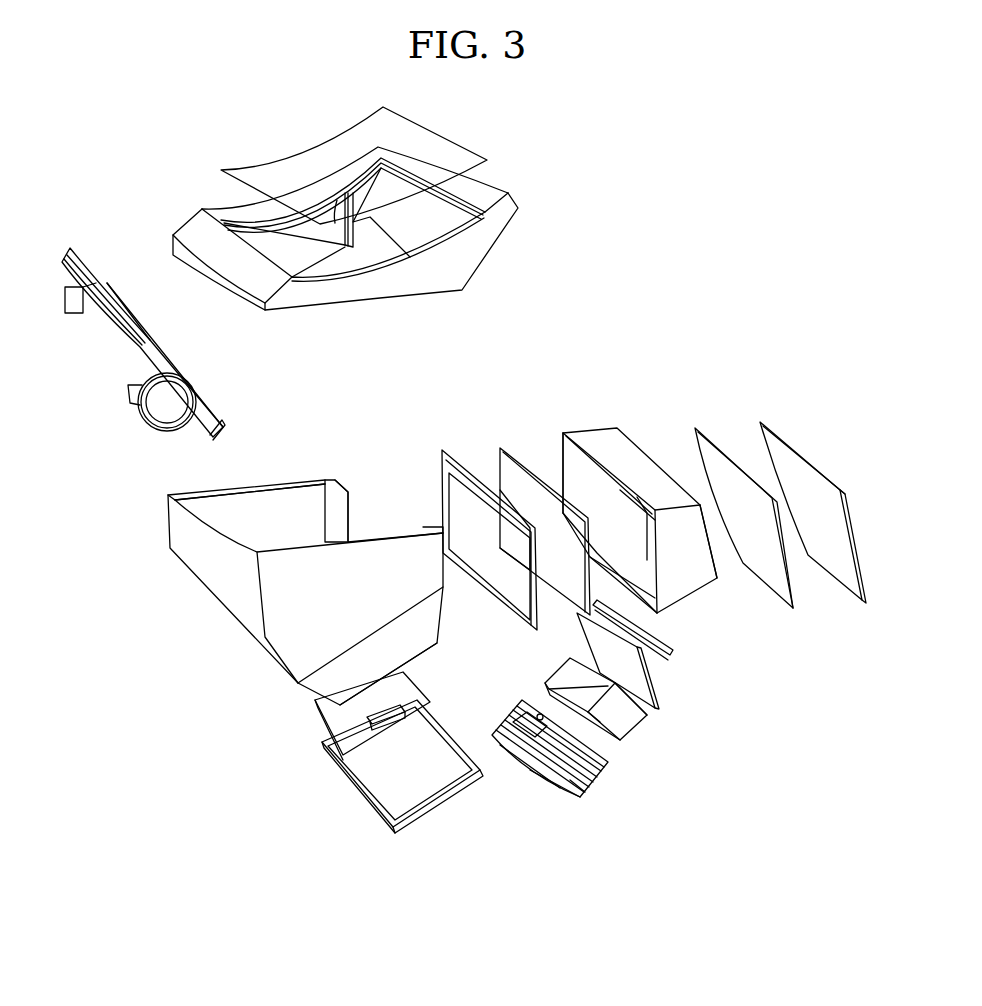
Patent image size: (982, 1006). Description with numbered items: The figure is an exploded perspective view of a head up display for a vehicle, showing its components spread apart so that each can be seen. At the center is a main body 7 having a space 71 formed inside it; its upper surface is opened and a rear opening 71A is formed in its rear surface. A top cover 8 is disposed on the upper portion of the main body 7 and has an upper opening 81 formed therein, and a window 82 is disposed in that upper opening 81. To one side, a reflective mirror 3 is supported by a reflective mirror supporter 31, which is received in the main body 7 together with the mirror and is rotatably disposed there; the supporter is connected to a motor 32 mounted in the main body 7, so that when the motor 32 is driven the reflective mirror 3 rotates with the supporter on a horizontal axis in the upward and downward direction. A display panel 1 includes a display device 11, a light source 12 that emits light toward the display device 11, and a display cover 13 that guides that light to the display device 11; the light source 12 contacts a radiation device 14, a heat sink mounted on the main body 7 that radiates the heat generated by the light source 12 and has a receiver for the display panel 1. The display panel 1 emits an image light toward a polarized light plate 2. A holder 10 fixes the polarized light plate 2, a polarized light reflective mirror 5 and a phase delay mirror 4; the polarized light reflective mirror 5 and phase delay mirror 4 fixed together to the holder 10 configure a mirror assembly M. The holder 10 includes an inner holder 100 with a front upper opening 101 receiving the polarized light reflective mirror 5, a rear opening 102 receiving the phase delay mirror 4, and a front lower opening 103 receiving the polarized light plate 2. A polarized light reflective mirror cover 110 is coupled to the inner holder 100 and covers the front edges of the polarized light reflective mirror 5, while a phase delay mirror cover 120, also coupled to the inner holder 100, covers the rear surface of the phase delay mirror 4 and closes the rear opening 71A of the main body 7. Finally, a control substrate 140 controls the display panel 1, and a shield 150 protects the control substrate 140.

The display panel 1 is at (540, 780).
The polarized light plate 2 is at (657, 685).
The reflective mirror 3 is at (95, 280).
The phase delay mirror 4 is at (770, 577).
The polarized light reflective mirror 5 is at (570, 585).
The main body 7 is at (228, 577).
The top cover 8 is at (488, 251).
The holder 10 is at (545, 373).
The display device 11 is at (645, 717).
The light source 12 is at (620, 743).
The display cover 13 is at (627, 723).
The radiation device 14 is at (583, 775).
The reflective mirror supporter 31 is at (90, 316).
The motor 32 is at (158, 417).
The space 71 is at (265, 517).
The rear opening 71A is at (363, 520).
The upper opening 81 is at (339, 264).
The window 82 is at (318, 150).
The inner holder 100 is at (610, 432).
The front upper opening 101 is at (573, 477).
The rear opening 102 is at (647, 513).
The front lower opening 103 is at (647, 662).
The polarized light reflective mirror cover 110 is at (467, 468).
The phase delay mirror cover 120 is at (778, 453).
The control substrate 140 is at (338, 727).
The shield 150 is at (380, 782).
The mirror assembly M is at (798, 435).